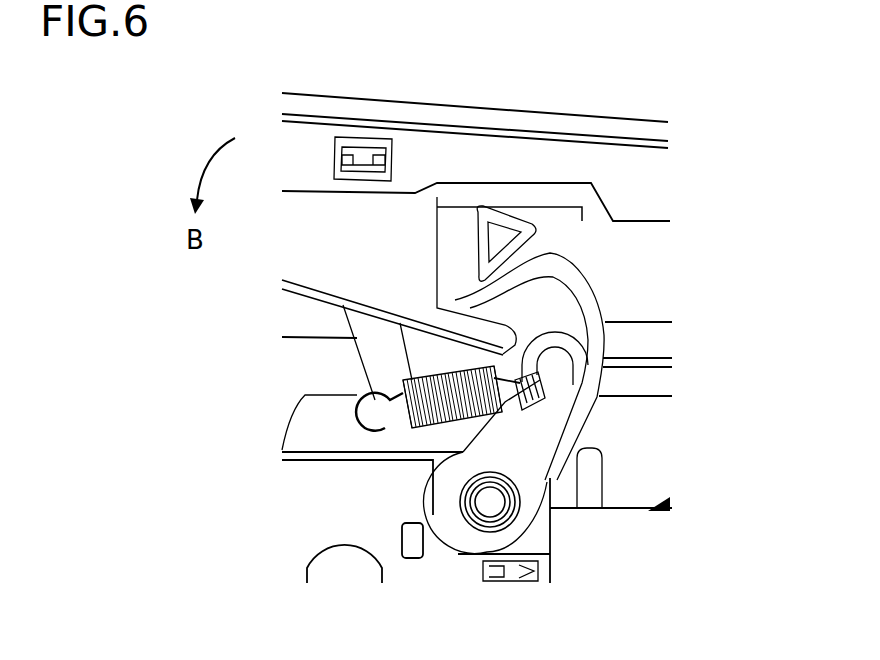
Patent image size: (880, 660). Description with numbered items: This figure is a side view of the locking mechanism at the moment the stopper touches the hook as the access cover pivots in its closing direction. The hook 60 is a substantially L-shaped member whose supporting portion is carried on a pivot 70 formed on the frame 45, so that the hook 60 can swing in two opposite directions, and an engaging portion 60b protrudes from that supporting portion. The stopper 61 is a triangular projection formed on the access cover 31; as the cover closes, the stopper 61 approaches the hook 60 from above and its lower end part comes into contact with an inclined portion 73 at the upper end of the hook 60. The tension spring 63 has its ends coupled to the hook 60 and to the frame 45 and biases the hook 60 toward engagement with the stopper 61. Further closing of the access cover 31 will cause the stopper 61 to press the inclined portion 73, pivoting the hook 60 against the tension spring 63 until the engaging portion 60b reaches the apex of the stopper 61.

The access cover 31 is at (638, 128).
The stopper 61 is at (512, 224).
The engaging portion 60b is at (455, 305).
The inclined portion 73 is at (505, 285).
The tension spring 63 is at (392, 380).
The hook 60 is at (534, 375).
The pivot 70 is at (485, 505).
The frame 45 is at (639, 511).